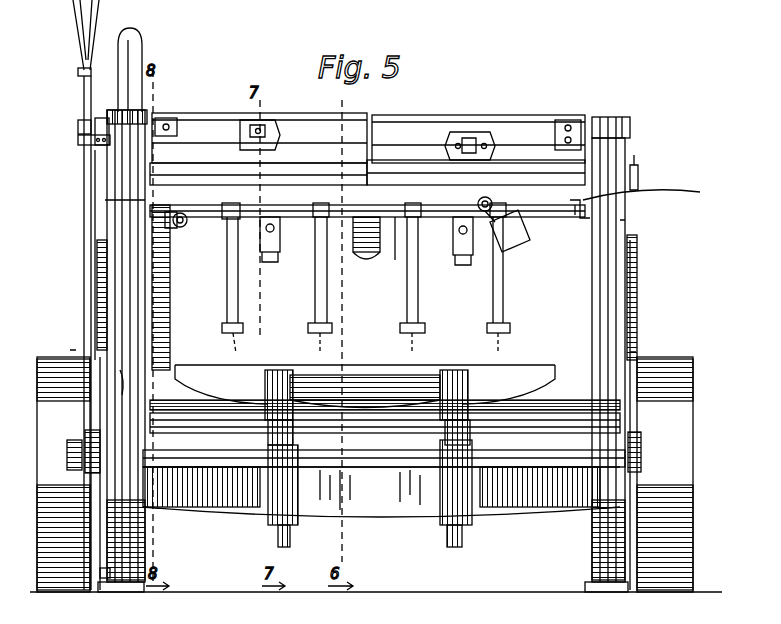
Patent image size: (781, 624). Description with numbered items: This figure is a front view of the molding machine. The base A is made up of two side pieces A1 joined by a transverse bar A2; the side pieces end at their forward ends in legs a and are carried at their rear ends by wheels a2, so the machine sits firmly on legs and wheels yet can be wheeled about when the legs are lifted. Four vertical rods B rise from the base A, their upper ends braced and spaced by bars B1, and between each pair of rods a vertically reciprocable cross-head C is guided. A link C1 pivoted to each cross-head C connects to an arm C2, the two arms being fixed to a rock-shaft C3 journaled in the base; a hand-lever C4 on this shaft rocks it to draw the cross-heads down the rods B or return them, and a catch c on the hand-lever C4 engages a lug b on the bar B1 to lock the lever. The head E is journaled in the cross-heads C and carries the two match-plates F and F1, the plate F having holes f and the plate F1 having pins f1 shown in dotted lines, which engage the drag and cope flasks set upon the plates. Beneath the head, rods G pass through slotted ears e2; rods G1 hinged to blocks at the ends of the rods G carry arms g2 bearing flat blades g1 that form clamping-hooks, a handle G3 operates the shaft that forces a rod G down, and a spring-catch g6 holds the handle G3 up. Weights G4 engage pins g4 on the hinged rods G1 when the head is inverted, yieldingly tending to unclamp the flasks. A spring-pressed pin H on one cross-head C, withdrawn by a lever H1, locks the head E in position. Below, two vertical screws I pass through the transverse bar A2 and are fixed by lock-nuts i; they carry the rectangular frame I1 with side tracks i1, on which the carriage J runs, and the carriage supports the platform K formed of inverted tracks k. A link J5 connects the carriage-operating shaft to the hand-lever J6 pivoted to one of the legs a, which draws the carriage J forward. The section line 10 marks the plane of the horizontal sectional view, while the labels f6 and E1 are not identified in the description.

The vertical rods B is at (110, 306).
The side pieces A1 is at (106, 521).
The wheels a2 is at (363, 415).
The arm C2 is at (66, 456).
The catch c is at (80, 120).
The lug b is at (78, 144).
The bars B1 is at (100, 124).
The handle f6 is at (132, 30).
The hand-lever C4 is at (82, 172).
The cross-head C is at (104, 214).
The link C1 is at (100, 276).
The section line 10 is at (70, 351).
The hand-lever J6 is at (122, 388).
The legs a is at (100, 575).
The match-plate F is at (192, 150).
The match-plate F1 is at (420, 170).
The holes f is at (280, 150).
The pins f1 is at (505, 145).
The rods G is at (456, 252).
The hinged rods G1 is at (242, 218).
The arms g2 is at (230, 292).
The spring-catch g6 is at (187, 228).
The slotted ears e2 is at (369, 249).
The block E1 is at (366, 262).
The pins g4 is at (488, 197).
The weights G4 is at (522, 246).
The spring-pressed pin H is at (578, 221).
The lever H1 is at (640, 170).
The head E is at (652, 190).
The handle G3 is at (170, 342).
The platform K is at (365, 375).
The carriage J is at (366, 380).
The flat blades g1 is at (377, 348).
The inverted tracks k is at (525, 370).
The tracks i1 is at (532, 398).
The rectangular frame I1 is at (530, 428).
The link J5 is at (230, 429).
The rock-shaft C3 is at (333, 429).
The transverse bar A2 is at (384, 483).
The lock-nuts i is at (296, 460).
The vertical screws I is at (250, 545).
The base A is at (555, 535).